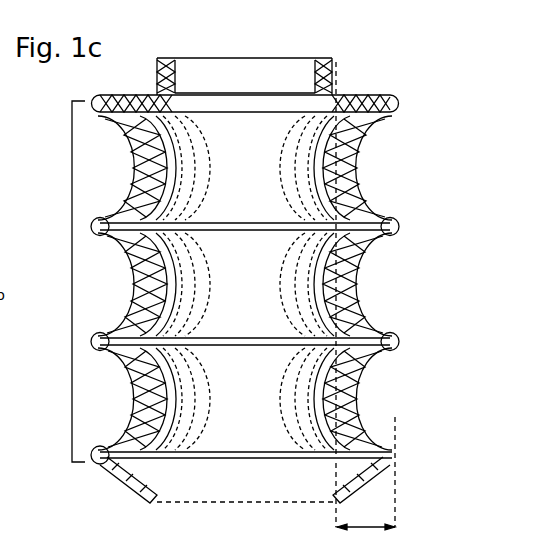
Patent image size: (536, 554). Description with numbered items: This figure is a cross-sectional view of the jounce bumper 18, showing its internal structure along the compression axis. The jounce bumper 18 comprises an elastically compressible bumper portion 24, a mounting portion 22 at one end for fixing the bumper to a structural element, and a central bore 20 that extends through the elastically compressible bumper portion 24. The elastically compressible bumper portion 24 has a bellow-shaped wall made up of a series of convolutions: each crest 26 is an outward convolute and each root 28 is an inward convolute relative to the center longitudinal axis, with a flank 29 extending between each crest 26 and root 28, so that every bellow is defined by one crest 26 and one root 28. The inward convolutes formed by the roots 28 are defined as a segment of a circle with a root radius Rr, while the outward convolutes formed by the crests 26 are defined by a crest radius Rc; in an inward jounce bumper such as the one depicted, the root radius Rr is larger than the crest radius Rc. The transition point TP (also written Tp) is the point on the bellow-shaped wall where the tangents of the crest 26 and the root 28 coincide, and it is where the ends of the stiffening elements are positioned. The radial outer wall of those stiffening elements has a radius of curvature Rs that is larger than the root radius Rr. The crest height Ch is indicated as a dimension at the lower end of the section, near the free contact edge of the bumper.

The central bore 20 is at (228, 118).
The mounting portion 22 is at (333, 58).
The elastically compressible bumper portion 24 is at (72, 283).
The root radius Rr is at (352, 142).
The stiffening element radius Rs is at (357, 171).
The transition point TP is at (393, 218).
The crest radius Rc is at (396, 230).
The transition point Tp is at (373, 330).
The crest 26 is at (396, 340).
The flank portion 29 is at (352, 366).
The root 28 is at (330, 402).
The crest height Ch is at (372, 527).
The jounce bumper 18 is at (150, 503).